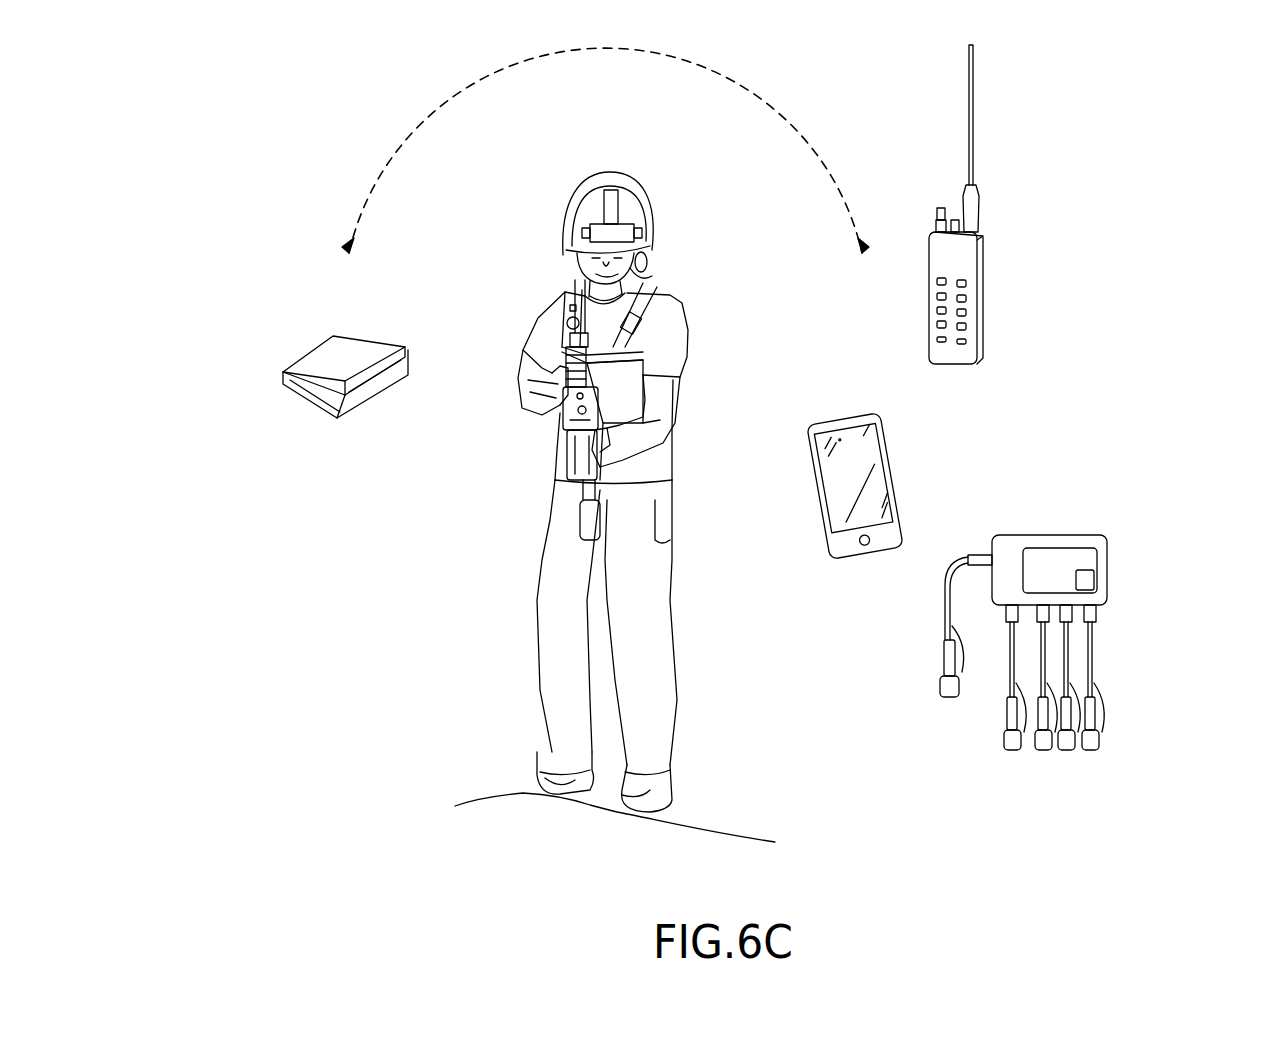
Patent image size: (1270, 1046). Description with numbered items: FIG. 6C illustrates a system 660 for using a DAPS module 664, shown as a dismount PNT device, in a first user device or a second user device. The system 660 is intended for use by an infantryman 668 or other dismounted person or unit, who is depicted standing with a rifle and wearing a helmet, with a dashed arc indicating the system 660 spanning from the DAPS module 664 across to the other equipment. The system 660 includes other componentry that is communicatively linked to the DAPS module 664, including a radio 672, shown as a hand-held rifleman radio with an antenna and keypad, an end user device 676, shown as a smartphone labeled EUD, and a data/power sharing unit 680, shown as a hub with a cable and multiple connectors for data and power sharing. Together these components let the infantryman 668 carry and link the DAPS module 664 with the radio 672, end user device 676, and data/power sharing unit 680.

The system 660 is at (238, 88).
The DAPS module 664 is at (295, 370).
The infantryman 668 is at (540, 607).
The radio 672 is at (965, 80).
The end user device 676 is at (838, 515).
The data/power sharing unit 680 is at (945, 676).